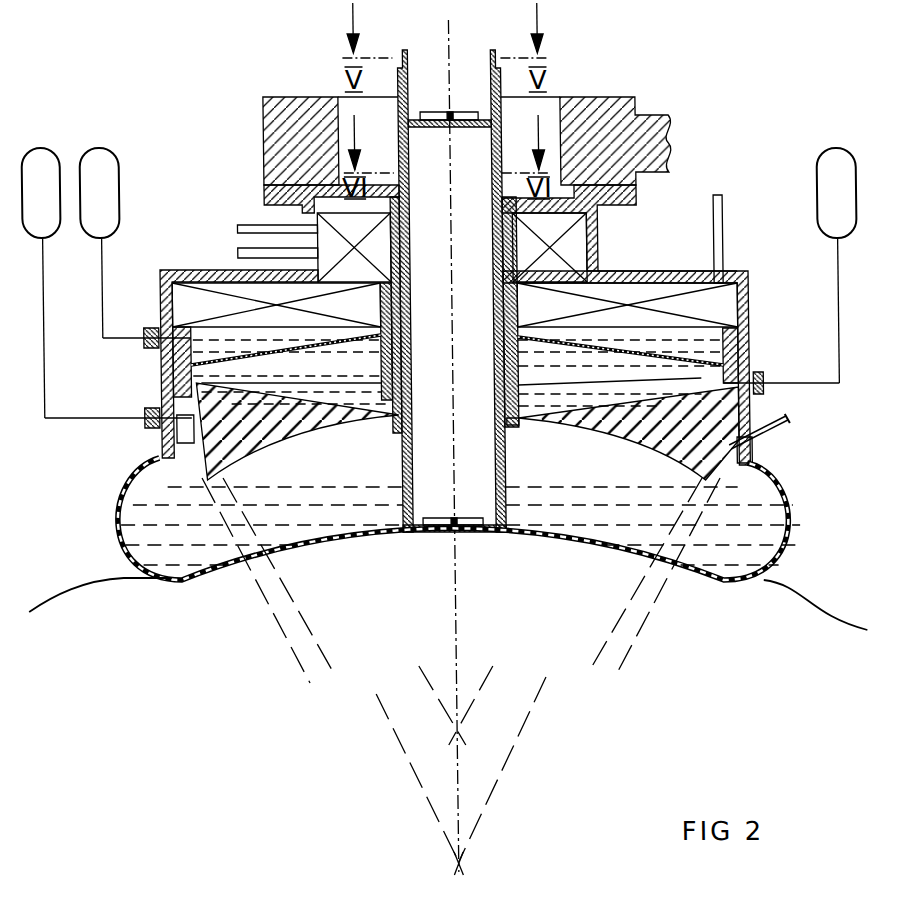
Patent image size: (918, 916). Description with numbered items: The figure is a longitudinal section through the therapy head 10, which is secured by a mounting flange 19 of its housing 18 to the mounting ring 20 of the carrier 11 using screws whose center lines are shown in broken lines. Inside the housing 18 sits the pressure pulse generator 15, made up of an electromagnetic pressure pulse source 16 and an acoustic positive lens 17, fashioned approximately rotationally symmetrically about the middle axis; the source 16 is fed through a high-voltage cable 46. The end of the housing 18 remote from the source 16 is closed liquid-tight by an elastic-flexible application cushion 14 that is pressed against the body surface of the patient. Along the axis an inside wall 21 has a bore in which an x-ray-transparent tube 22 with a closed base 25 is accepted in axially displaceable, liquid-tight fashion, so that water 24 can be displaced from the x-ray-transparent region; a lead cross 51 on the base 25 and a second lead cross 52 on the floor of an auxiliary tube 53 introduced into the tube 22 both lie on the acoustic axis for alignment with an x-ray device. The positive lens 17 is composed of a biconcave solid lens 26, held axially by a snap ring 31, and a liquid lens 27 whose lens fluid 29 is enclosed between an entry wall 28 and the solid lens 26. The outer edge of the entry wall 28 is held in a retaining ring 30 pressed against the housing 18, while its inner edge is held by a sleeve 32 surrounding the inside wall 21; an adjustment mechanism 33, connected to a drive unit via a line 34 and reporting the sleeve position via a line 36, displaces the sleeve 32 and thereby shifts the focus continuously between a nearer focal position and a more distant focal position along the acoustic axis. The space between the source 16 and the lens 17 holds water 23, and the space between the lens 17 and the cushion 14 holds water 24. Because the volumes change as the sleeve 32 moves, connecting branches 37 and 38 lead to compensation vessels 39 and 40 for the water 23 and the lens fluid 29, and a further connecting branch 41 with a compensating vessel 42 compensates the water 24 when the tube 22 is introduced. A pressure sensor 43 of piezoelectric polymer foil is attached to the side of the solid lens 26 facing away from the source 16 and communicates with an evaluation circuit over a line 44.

The therapy head 10 is at (655, 271).
The carrier 11 is at (668, 120).
The application cushion 14 is at (797, 535).
The pressure pulse generator 15 is at (150, 360).
The electromagnetic pressure pulse source 16 is at (185, 298).
The acoustic positive lens 17 is at (190, 460).
The housing 18 is at (748, 286).
The mounting flange 19 is at (640, 190).
The mounting ring 20 is at (268, 130).
The inside wall 21 is at (510, 425).
The tube 22 is at (400, 498).
The water 23 is at (740, 336).
The water 24 is at (115, 533).
The base 25 is at (408, 540).
The solid lens 26 is at (275, 435).
The liquid lens 27 is at (192, 372).
The entry wall 28 is at (383, 355).
The lens fluid 29 is at (337, 397).
The retaining ring 30 is at (740, 352).
The snap ring 31 is at (740, 444).
The sleeve 32 is at (517, 307).
The adjustment mechanism 33 is at (572, 250).
The line 34 is at (248, 225).
The line 36 is at (248, 250).
The connecting branch 37 is at (150, 330).
The connecting branch 38 is at (770, 390).
The compensation vessel 39 is at (100, 158).
The compensation vessel 40 is at (839, 158).
The connecting branch 41 is at (150, 425).
The compensating vessel 42 is at (42, 158).
The pressure sensor 43 is at (690, 470).
The line 44 is at (780, 422).
The high-voltage cable 46 is at (718, 213).
The lead cross 51 is at (468, 517).
The second lead cross 52 is at (432, 112).
The auxiliary tube 53 is at (489, 52).